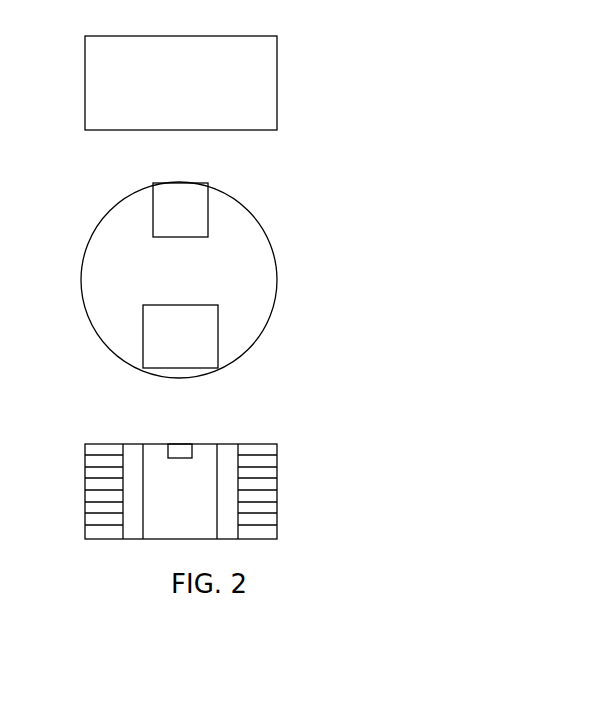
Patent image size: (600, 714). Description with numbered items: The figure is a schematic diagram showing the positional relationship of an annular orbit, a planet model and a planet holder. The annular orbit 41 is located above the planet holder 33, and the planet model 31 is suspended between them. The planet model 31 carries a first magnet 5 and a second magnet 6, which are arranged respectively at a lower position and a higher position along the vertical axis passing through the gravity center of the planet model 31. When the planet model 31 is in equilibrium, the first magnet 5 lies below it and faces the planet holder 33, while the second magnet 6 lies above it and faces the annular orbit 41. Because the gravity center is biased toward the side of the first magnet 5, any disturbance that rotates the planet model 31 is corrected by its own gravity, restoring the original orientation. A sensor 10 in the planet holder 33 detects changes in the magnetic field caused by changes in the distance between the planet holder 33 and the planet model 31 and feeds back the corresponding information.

The annular orbit 41 is at (255, 95).
The planet model 31 is at (247, 280).
The second magnet 6 is at (193, 212).
The first magnet 5 is at (198, 347).
The planet holder 33 is at (228, 500).
The sensor 10 is at (187, 448).